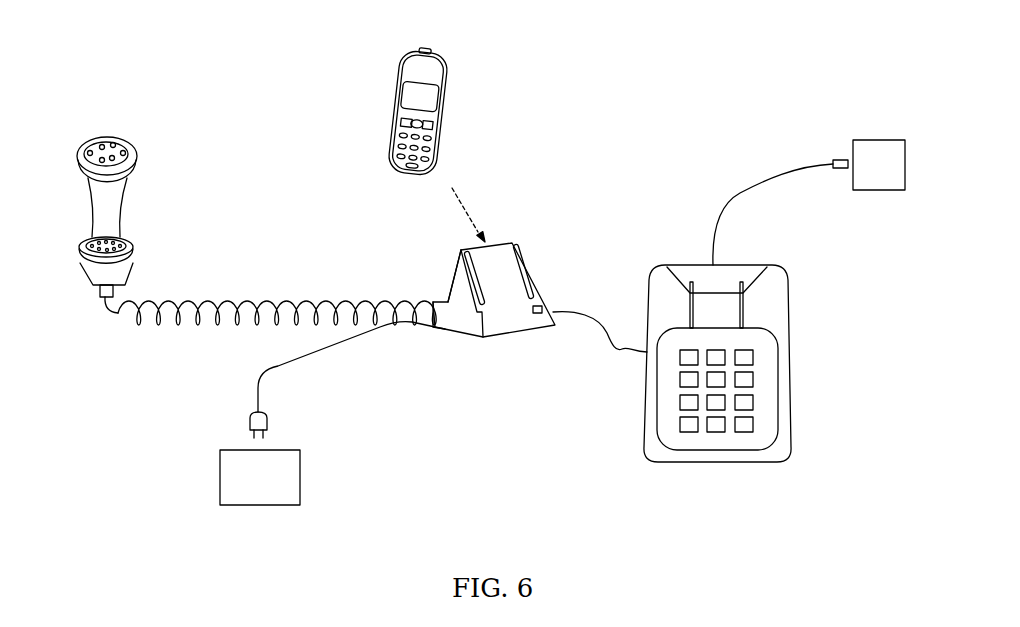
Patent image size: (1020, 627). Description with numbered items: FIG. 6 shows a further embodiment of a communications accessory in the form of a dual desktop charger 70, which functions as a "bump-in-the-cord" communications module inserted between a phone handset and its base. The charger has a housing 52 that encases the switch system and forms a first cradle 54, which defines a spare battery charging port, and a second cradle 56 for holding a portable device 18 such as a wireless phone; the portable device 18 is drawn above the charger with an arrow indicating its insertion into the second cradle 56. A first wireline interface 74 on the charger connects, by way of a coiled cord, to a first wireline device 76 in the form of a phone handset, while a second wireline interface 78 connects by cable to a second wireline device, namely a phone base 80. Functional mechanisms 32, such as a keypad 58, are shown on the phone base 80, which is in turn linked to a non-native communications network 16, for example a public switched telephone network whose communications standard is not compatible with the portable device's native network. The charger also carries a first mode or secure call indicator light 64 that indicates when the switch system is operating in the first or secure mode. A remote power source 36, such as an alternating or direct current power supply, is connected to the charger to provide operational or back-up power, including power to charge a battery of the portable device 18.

The non-native communications network 16 is at (868, 140).
The portable device 18 is at (414, 51).
The functional mechanisms 32 is at (744, 349).
The remote power source 36 is at (255, 506).
The housing 52 is at (510, 337).
The first cradle 54 is at (440, 281).
The second cradle 56 is at (510, 243).
The keypad 58 is at (683, 430).
The first mode or secure call indicator light 64 is at (547, 293).
The dual desktop charger 70 is at (485, 264).
The first wireline interface 74 is at (449, 333).
The first wireline device 76 is at (107, 132).
The second wireline interface 78 is at (557, 325).
The phone base 80 is at (770, 265).